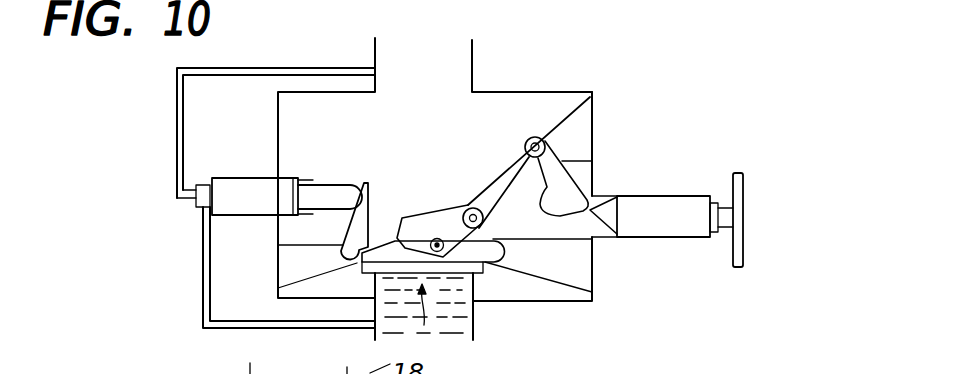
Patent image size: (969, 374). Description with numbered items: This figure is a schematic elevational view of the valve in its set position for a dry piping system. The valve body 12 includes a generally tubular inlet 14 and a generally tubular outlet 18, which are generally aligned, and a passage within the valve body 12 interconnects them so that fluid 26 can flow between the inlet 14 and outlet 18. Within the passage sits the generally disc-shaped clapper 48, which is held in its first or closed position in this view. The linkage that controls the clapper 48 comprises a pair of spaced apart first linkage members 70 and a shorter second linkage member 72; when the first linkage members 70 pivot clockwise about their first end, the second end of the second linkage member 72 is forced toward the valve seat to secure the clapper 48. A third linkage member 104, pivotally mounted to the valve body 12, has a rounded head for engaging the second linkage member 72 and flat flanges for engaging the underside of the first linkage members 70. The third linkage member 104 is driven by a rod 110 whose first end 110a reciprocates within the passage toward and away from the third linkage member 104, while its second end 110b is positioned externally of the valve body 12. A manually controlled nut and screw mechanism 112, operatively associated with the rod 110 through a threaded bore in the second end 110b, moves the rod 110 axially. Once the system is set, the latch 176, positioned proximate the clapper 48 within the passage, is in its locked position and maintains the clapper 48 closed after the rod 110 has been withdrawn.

The valve body 12 is at (580, 92).
The inlet 14 is at (473, 327).
The outlet 18 is at (472, 50).
The fluid 26 is at (452, 307).
The clapper 48 is at (383, 259).
The first linkage member 70 is at (490, 187).
The second linkage member 72 is at (428, 213).
The third linkage member 104 is at (523, 163).
The rod 110 is at (645, 207).
The first end of the rod 110a is at (608, 218).
The second end of the rod 110b is at (668, 123).
The nut and screw mechanism 112 is at (685, 184).
The latch 176 is at (368, 182).